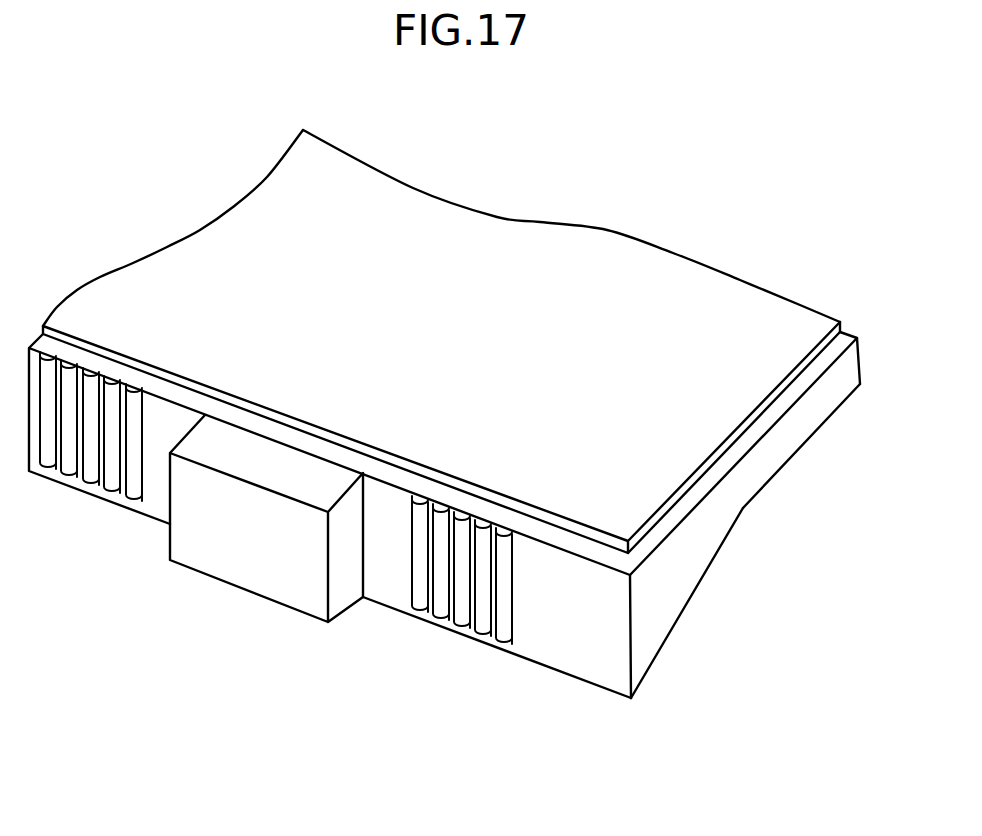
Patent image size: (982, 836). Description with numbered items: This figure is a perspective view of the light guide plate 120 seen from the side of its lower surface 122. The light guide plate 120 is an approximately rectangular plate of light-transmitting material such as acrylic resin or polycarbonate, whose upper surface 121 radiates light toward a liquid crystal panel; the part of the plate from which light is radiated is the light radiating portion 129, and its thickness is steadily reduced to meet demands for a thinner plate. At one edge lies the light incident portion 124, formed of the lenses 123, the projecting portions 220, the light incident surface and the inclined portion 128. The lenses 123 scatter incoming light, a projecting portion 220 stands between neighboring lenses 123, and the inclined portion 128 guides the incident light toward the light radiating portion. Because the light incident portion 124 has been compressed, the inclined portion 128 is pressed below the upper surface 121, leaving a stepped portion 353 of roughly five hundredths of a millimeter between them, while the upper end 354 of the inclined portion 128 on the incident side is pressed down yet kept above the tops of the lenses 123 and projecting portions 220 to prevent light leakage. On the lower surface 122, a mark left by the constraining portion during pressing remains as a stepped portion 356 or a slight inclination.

The light guide plate 120 is at (362, 668).
The upper surface 121 is at (797, 468).
The lower surface 122 is at (395, 215).
The lenses 123 is at (440, 640).
The light incident portion 124 is at (658, 612).
The inclined portion 128 is at (652, 670).
The light radiating portion 129 is at (620, 217).
The projecting portion 220 is at (227, 568).
The stepped portion 353 is at (740, 515).
The upper end of the inclined surface 354 is at (563, 677).
The stepped portion 356 is at (772, 403).